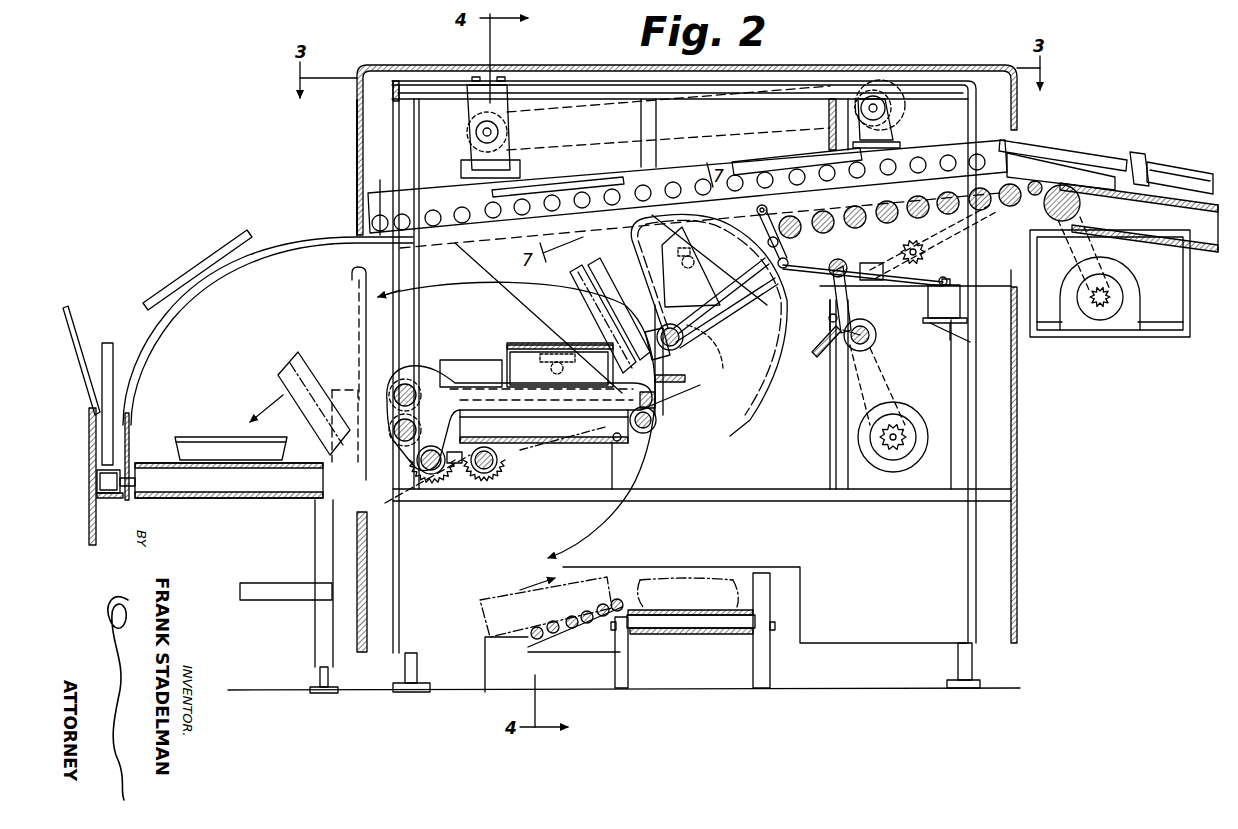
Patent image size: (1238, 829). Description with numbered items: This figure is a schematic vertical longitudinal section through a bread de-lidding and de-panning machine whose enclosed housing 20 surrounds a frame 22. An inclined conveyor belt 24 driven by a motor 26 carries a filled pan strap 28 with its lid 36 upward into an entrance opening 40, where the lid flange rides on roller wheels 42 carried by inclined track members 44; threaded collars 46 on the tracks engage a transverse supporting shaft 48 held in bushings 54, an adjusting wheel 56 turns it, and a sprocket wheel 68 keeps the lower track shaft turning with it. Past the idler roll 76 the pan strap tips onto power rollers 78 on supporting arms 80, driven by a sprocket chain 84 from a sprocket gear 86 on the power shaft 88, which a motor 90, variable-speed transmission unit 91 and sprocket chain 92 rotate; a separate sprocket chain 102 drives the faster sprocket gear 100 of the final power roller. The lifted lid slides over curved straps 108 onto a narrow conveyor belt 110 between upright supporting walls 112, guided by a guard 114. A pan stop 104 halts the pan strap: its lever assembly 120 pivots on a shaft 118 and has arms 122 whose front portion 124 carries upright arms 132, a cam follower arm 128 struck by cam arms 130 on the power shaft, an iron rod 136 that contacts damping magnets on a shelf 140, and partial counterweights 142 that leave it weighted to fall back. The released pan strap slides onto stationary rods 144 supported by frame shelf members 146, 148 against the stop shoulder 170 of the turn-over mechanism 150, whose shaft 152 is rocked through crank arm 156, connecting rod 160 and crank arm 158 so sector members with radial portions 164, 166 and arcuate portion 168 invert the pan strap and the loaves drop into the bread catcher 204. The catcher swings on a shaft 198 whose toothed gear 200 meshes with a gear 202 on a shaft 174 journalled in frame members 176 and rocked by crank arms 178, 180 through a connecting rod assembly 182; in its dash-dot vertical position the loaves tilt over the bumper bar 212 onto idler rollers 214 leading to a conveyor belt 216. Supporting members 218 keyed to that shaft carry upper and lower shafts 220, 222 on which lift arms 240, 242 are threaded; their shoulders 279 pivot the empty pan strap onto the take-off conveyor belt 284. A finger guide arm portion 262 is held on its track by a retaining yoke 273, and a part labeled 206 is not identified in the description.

The housing 20 is at (363, 70).
The frame 22 is at (463, 88).
The conveyor belt 24 is at (1145, 245).
The motor 26 is at (1108, 325).
The pan strap 28 is at (198, 437).
The lid 36 is at (222, 250).
The entrance opening 40 is at (1022, 134).
The roller wheels 42 is at (947, 160).
The track members 44 is at (380, 192).
The threaded collars 46 is at (861, 107).
The transverse supporting shaft 48 is at (890, 104).
The bushings 54 is at (883, 88).
The adjusting wheel 56 is at (850, 99).
The sprocket wheel 68 is at (885, 112).
The idler roll 76 is at (1040, 208).
The rollers 78 is at (1000, 208).
The supporting arms 80 is at (1005, 283).
The sprocket chain 84 is at (985, 225).
The sprocket gear 86 is at (868, 342).
The power shaft 88 is at (862, 350).
The motor 90 is at (912, 418).
The variable-speed transmission unit 91 is at (890, 452).
The sprocket chain 92 is at (888, 380).
The sprocket gear 100 is at (357, 180).
The sprocket chain 102 is at (835, 310).
The pan stop 104 is at (757, 223).
The curved straps 108 is at (317, 216).
The conveyor belt 110 is at (110, 470).
The supporting walls 112 is at (89, 412).
The guard 114 is at (88, 292).
The shaft 118 is at (822, 300).
The lever assembly 120 is at (925, 272).
The arms 122 is at (920, 284).
The front portion 124 is at (812, 275).
The cam follower arm 128 is at (840, 333).
The cam arms 130 is at (858, 322).
The arms 132 is at (745, 232).
The iron rod 136 is at (960, 305).
The shelf 140 is at (962, 325).
The counterweights 142 is at (880, 256).
The stationary rods 144 is at (735, 290).
The frame shelf member 146 is at (690, 376).
The frame shelf member 148 is at (846, 262).
The turn-over mechanism 150 is at (634, 254).
The shaft 152 is at (684, 335).
The crank arm 156 is at (878, 336).
The crank arm 158 is at (690, 352).
The connecting rod 160 is at (685, 380).
The radial portion 164 is at (636, 236).
The radial portion 166 is at (732, 310).
The arcuate portion 168 is at (676, 218).
The stop shoulder 170 is at (665, 390).
The shaft 174 is at (466, 418).
The frame members 176 is at (438, 484).
The crank arm 178 is at (380, 500).
The crank arm 180 is at (825, 347).
The connecting rod assembly 182 is at (585, 445).
The shaft 198 is at (488, 437).
The toothed gear 200 is at (482, 480).
The gear 202 is at (428, 484).
The bread catcher 204 is at (592, 448).
The support 206 is at (612, 448).
The bumper bar 212 is at (655, 425).
The idler rollers 214 is at (588, 622).
The conveyor belt 216 is at (698, 628).
The supporting members 218 is at (420, 462).
The upper shaft 220 is at (398, 388).
The lower shaft 222 is at (398, 425).
The lift arm 240 is at (430, 372).
The lift arm 242 is at (356, 300).
The arm portion 262 is at (482, 380).
The retaining yoke 273 is at (655, 415).
The shoulders 279 is at (432, 370).
The take-off conveyor belt 284 is at (232, 500).